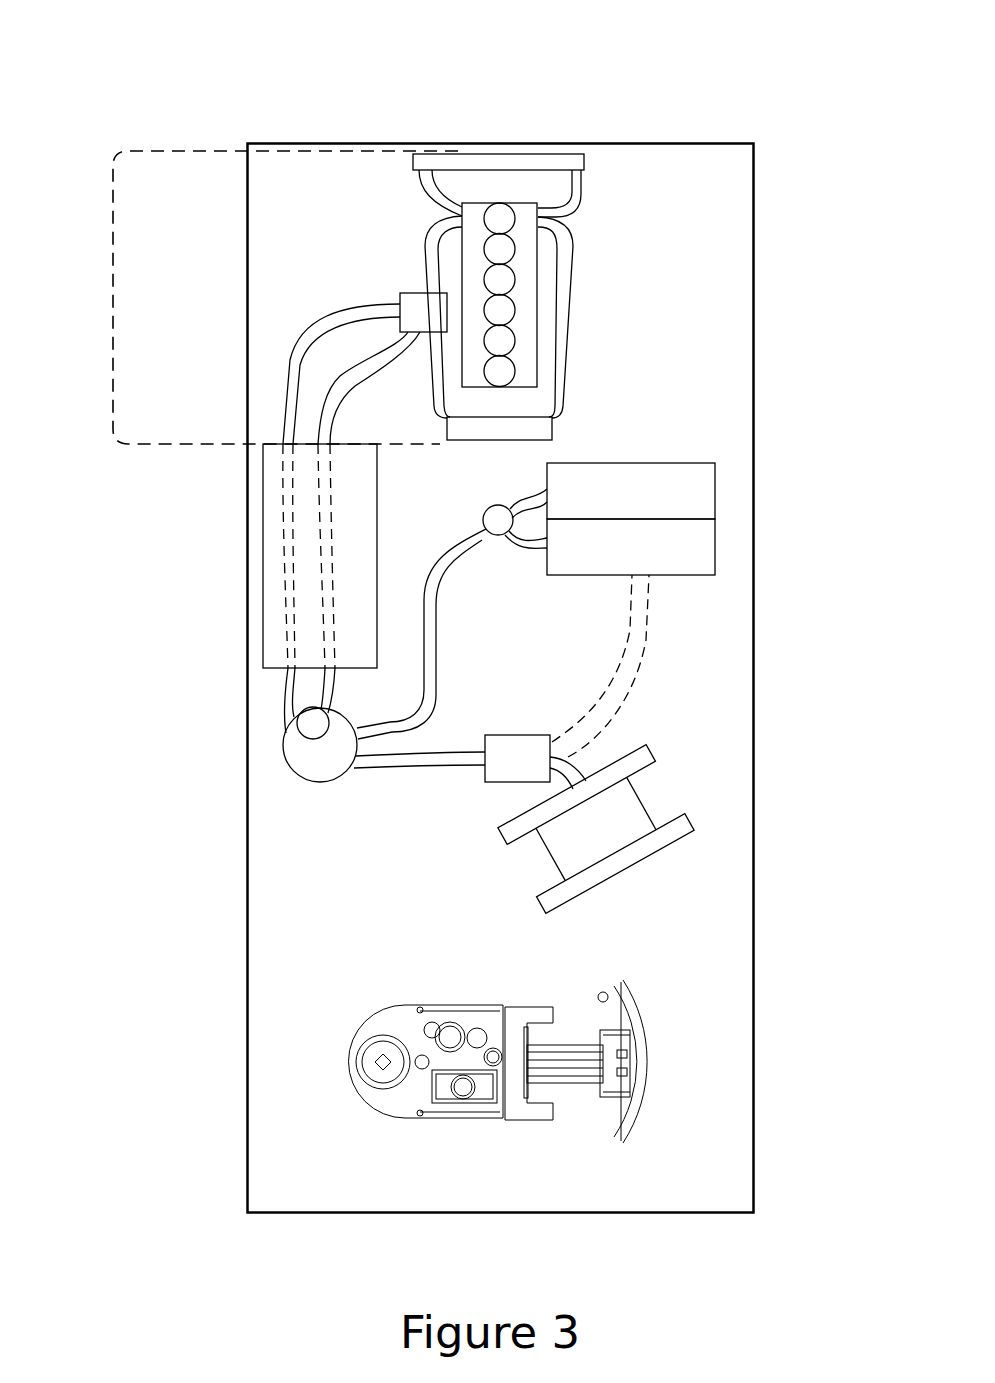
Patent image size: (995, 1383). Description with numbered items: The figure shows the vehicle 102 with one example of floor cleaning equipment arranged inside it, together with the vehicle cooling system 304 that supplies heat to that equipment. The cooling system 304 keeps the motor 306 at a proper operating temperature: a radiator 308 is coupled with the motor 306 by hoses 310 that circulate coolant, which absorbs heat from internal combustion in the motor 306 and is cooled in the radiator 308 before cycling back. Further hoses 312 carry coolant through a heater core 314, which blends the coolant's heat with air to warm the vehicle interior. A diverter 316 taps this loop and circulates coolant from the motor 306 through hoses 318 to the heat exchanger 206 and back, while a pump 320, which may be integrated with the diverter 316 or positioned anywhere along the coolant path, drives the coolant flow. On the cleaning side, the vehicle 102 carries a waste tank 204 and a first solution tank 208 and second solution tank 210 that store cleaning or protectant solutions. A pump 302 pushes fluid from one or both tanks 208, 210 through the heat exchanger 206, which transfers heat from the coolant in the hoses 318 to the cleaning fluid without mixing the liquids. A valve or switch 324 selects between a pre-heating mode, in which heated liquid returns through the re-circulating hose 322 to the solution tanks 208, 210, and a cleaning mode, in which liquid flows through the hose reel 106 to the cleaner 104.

The vehicle 102 is at (132, 72).
The cleaner 104 is at (432, 984).
The hose reel 106 is at (620, 872).
The waste tank 204 is at (377, 520).
The heat exchanger 206 is at (320, 782).
The first solution tank 208 is at (609, 568).
The second solution tank 210 is at (609, 512).
The pump 302 is at (494, 494).
The vehicle cooling system 304 is at (112, 287).
The motor 306 is at (497, 204).
The radiator 308 is at (465, 153).
The hoses 310 is at (420, 188).
The hoses 312 is at (431, 278).
The heater core 314 is at (492, 440).
The diverter 316 is at (411, 321).
The hoses 318 is at (330, 313).
The pump 320 is at (330, 718).
The re-circulating hose 322 is at (622, 680).
The valve or switch 324 is at (495, 770).